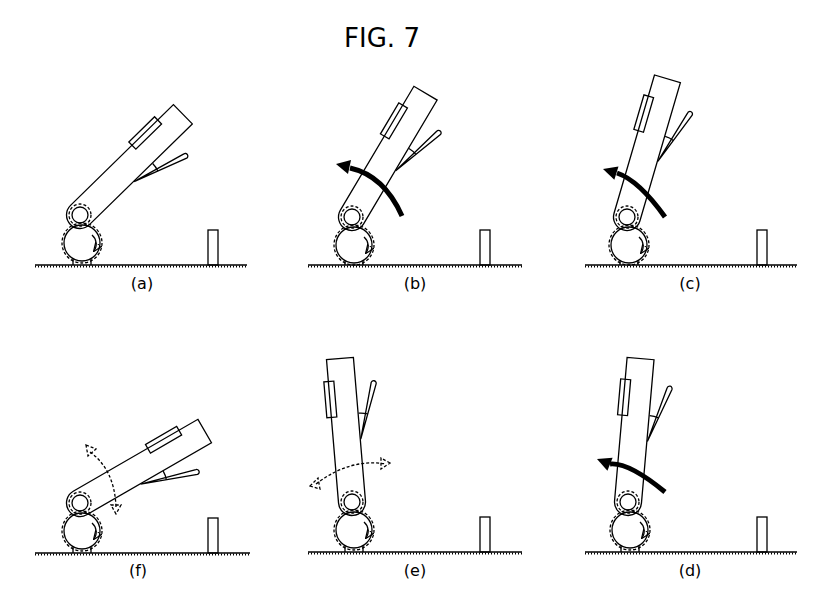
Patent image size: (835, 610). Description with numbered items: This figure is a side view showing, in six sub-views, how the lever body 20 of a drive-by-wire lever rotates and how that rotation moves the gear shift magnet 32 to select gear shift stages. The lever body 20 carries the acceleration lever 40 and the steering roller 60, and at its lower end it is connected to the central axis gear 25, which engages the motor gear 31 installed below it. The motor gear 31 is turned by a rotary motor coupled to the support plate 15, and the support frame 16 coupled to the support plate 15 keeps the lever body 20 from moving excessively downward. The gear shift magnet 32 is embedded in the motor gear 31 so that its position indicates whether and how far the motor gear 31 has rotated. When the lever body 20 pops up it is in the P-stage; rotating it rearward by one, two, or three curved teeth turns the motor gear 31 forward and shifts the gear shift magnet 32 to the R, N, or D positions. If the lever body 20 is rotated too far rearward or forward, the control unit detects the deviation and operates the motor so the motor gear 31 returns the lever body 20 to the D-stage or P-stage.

The support plate 15 is at (238, 266).
The support frame 16 is at (220, 238).
The lever body 20 is at (121, 171).
The central axis gear 25 is at (75, 210).
The motor gear 31 is at (78, 244).
The gear shift magnet 32 is at (72, 226).
The acceleration lever 40 is at (180, 160).
The steering roller 60 is at (143, 131).